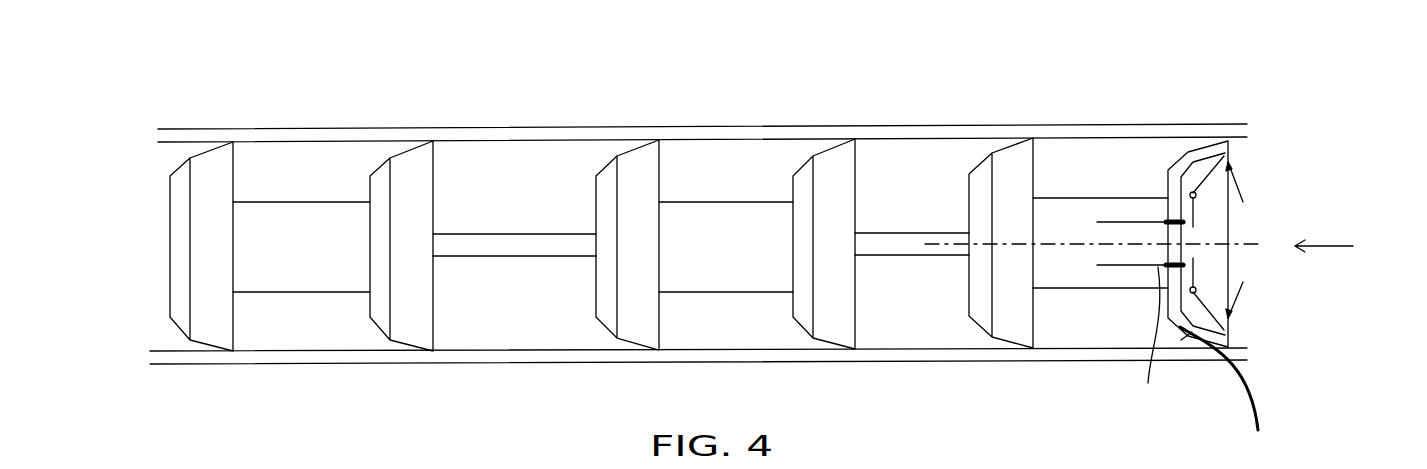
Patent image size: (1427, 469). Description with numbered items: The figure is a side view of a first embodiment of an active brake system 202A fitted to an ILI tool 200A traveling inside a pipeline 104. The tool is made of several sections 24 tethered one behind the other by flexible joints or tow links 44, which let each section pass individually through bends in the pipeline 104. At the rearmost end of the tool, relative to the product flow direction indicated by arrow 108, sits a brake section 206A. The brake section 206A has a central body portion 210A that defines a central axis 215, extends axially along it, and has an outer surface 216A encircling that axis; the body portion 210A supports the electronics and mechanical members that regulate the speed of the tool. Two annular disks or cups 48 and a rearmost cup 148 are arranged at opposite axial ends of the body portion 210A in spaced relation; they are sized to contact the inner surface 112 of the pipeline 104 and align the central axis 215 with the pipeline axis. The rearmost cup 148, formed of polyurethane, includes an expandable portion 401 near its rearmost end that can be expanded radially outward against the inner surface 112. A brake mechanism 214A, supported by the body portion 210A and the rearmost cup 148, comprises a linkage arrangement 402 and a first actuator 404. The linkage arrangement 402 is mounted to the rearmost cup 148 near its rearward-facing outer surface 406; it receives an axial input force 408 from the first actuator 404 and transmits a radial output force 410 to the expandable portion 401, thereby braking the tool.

The ILI tool 200A is at (110, 139).
The pipeline 104 is at (490, 367).
The annular disks or cups 48 is at (178, 163).
The sections 24 is at (326, 170).
The inner surface 112 is at (483, 145).
The flexible joints or tow links 44 is at (500, 230).
The central axis 215 is at (1073, 247).
The central body portion 210A is at (1055, 197).
The brake section 206A is at (1089, 162).
The outer surface 216A is at (1083, 232).
The active brake system 202A is at (1253, 249).
The brake mechanism 214A is at (1146, 172).
The expandable portion 401 is at (1247, 142).
The radial output force 410 is at (1237, 182).
The linkage arrangement 402 is at (1220, 204).
The outer surface 406 is at (1225, 264).
The first actuator 404 is at (1132, 280).
The axial input force 408 is at (1181, 340).
The rearmost cup 148 is at (1288, 310).
The product flow direction 108 is at (1347, 231).